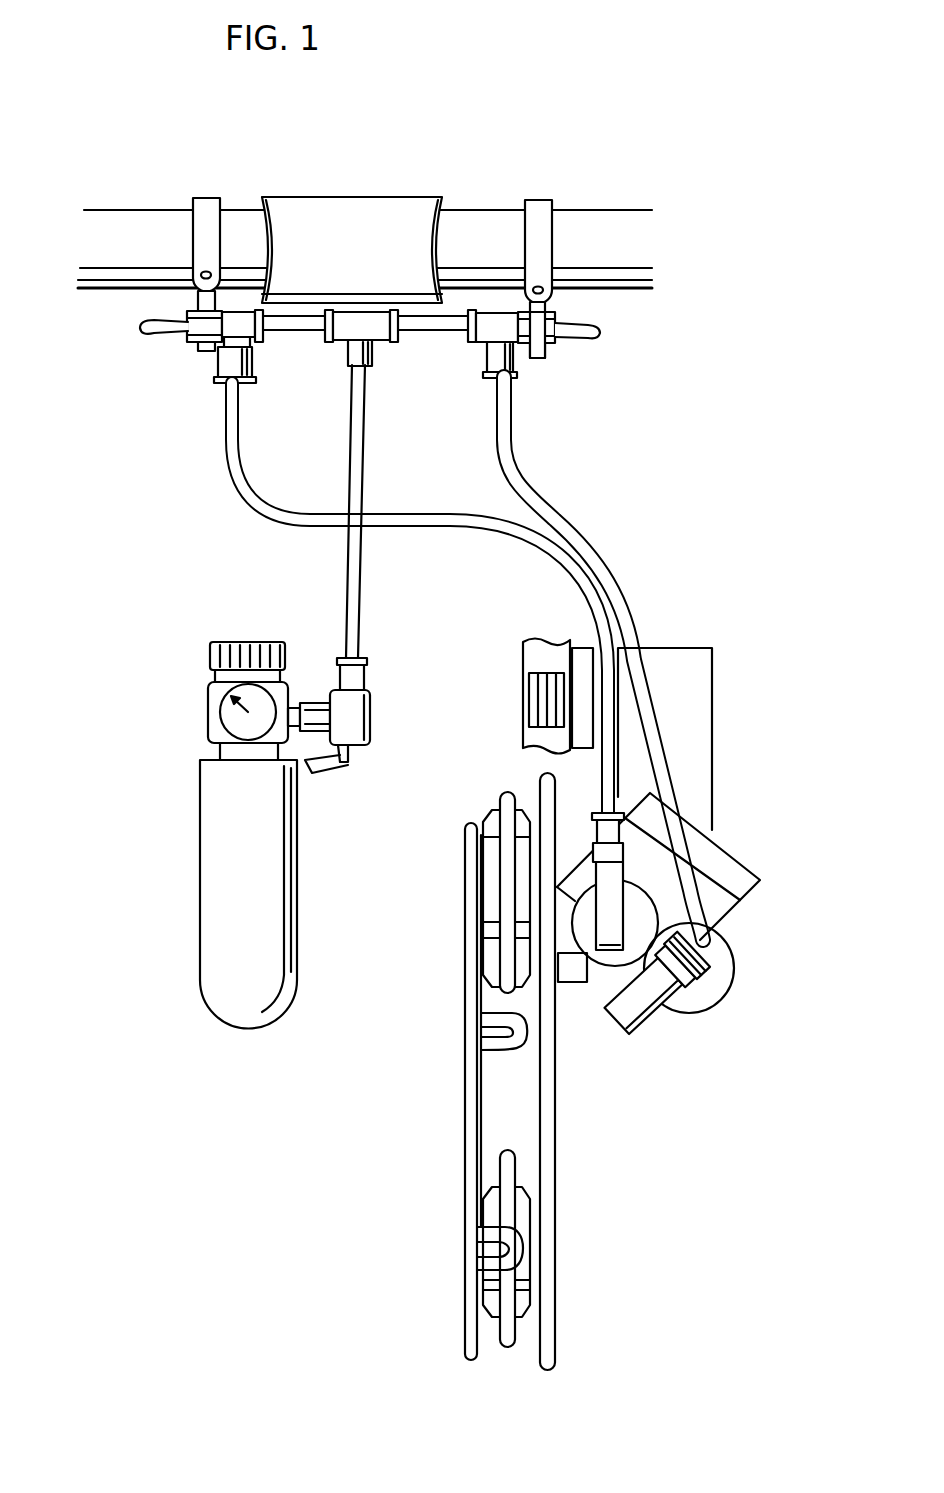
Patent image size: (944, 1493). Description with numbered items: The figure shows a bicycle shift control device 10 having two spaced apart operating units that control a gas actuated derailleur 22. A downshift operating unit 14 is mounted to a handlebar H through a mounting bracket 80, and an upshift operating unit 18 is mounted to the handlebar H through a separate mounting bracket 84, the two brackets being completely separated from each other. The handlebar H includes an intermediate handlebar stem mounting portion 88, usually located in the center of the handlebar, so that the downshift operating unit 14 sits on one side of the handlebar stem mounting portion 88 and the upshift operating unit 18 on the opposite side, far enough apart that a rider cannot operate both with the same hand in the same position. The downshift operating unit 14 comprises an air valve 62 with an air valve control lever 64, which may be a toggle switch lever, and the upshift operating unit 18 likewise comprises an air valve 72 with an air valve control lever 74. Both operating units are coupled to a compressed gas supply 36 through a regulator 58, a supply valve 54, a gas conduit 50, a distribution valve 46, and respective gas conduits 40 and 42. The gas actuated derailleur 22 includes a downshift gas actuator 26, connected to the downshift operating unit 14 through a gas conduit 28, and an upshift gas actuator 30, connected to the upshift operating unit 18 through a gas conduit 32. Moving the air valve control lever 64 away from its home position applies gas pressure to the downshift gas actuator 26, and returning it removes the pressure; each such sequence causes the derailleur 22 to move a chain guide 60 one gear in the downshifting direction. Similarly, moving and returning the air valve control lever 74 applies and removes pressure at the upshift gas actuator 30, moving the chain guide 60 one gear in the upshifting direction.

The handlebar H is at (118, 222).
The bicycle shift control device 10 is at (178, 579).
The downshift operating unit 14 is at (192, 364).
The upshift operating unit 18 is at (520, 361).
The gas actuated derailleur 22 is at (713, 762).
The downshift gas actuator 26 is at (606, 965).
The gas conduit 28 is at (250, 486).
The upshift gas actuator 30 is at (710, 986).
The gas conduit 32 is at (572, 494).
The compressed gas supply 36 is at (225, 850).
The gas conduit 40 is at (296, 334).
The gas conduit 42 is at (429, 334).
The distribution valve 46 is at (371, 346).
The gas conduit 50 is at (367, 462).
The supply valve 54 is at (372, 716).
The regulator 58 is at (210, 709).
The chain guide 60 is at (470, 978).
The air valve 62 is at (216, 366).
The air valve control lever 64 is at (146, 331).
The air valve 72 is at (488, 358).
The air valve control lever 74 is at (600, 331).
The mounting bracket 80 is at (203, 206).
The mounting bracket 84 is at (536, 212).
The handlebar stem mounting portion 88 is at (327, 206).